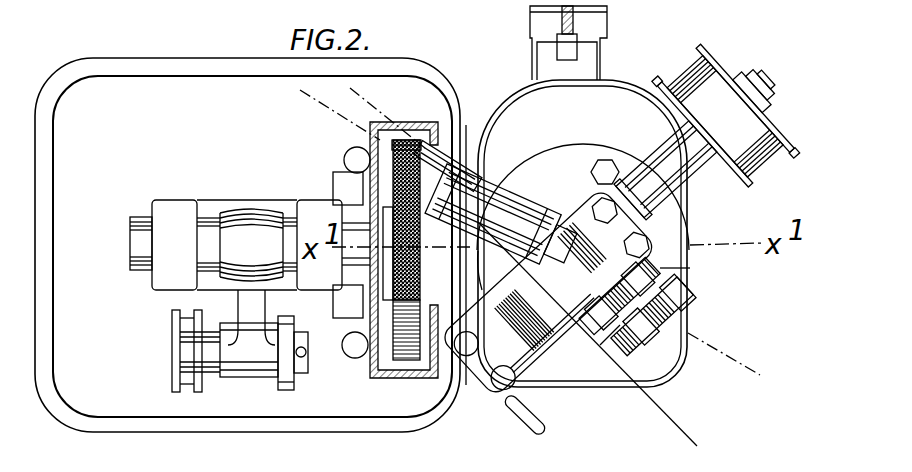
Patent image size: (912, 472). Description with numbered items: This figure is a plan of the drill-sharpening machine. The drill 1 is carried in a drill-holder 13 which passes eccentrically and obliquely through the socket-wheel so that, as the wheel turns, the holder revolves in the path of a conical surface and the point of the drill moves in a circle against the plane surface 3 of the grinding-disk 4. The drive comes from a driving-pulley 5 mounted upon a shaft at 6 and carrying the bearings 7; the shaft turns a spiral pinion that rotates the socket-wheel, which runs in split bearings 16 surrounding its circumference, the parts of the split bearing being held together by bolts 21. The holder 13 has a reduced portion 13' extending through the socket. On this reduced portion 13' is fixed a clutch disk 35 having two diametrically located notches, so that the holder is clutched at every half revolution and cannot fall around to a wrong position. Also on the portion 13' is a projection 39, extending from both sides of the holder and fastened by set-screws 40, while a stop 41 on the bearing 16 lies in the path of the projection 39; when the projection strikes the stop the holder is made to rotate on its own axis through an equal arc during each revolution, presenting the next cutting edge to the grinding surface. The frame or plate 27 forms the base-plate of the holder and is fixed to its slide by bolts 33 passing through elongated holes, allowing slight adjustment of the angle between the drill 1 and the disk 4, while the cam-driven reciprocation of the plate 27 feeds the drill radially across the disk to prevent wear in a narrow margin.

The drill 1 is at (466, 177).
The plane surface 3 is at (427, 272).
The grinding-disk 4 is at (408, 215).
The driving-pulley 5 is at (726, 117).
The shaft 6 is at (763, 92).
The bearings 7 is at (648, 165).
The drill-holder 13 is at (503, 216).
The reduced portion of the holder 13' is at (683, 316).
The split bearings 16 is at (521, 352).
The bolts 21 is at (480, 420).
The frame or plate 27 is at (557, 165).
The bolts 33 is at (606, 168).
The disk 35 is at (618, 333).
The projection 39 is at (645, 312).
The set-screws 40 is at (688, 270).
The stop 41 is at (550, 428).